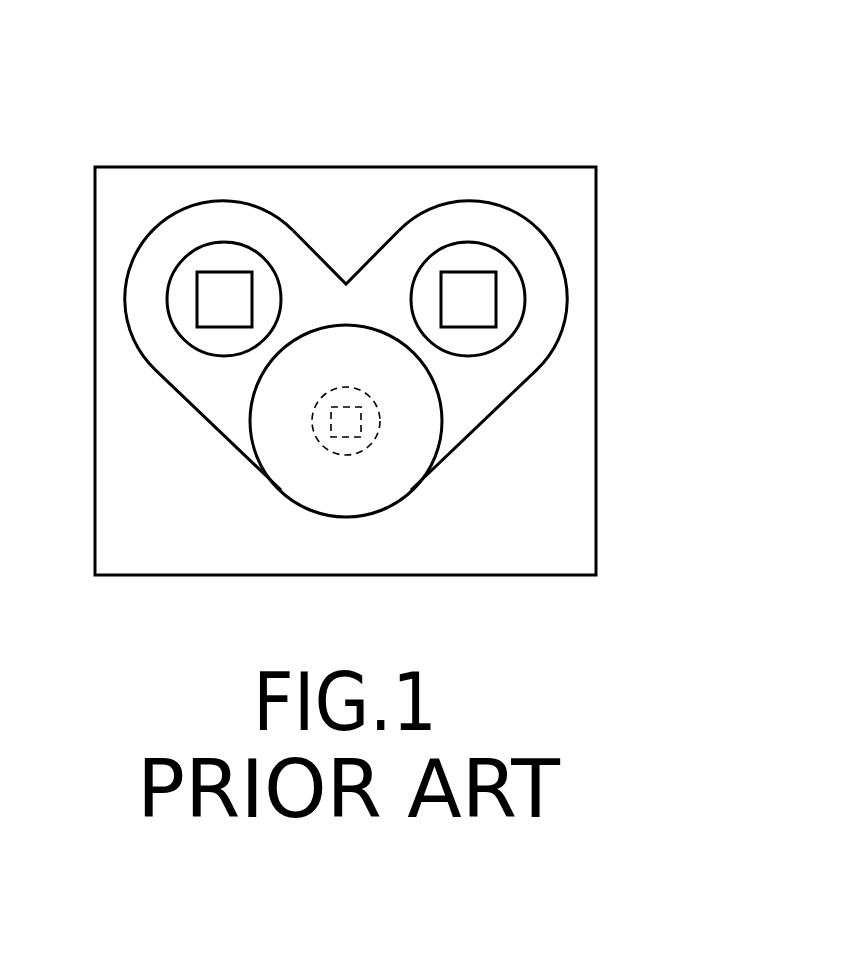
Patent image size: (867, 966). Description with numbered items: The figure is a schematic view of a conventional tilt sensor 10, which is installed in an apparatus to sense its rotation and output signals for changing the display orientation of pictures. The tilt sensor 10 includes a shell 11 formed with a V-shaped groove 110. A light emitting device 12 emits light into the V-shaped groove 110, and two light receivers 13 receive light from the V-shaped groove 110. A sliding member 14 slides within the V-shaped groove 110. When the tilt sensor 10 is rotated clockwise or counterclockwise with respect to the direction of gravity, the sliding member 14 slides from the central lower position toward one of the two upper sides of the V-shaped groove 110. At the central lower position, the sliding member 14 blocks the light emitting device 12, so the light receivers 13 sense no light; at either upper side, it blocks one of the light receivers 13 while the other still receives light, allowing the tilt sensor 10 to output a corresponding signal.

The tilt sensor 10 is at (364, 44).
The shell 11 is at (578, 438).
The V-shaped groove 110 is at (537, 231).
The light emitting device 12 is at (343, 437).
The light receivers 13 is at (225, 288).
The sliding member 14 is at (250, 422).